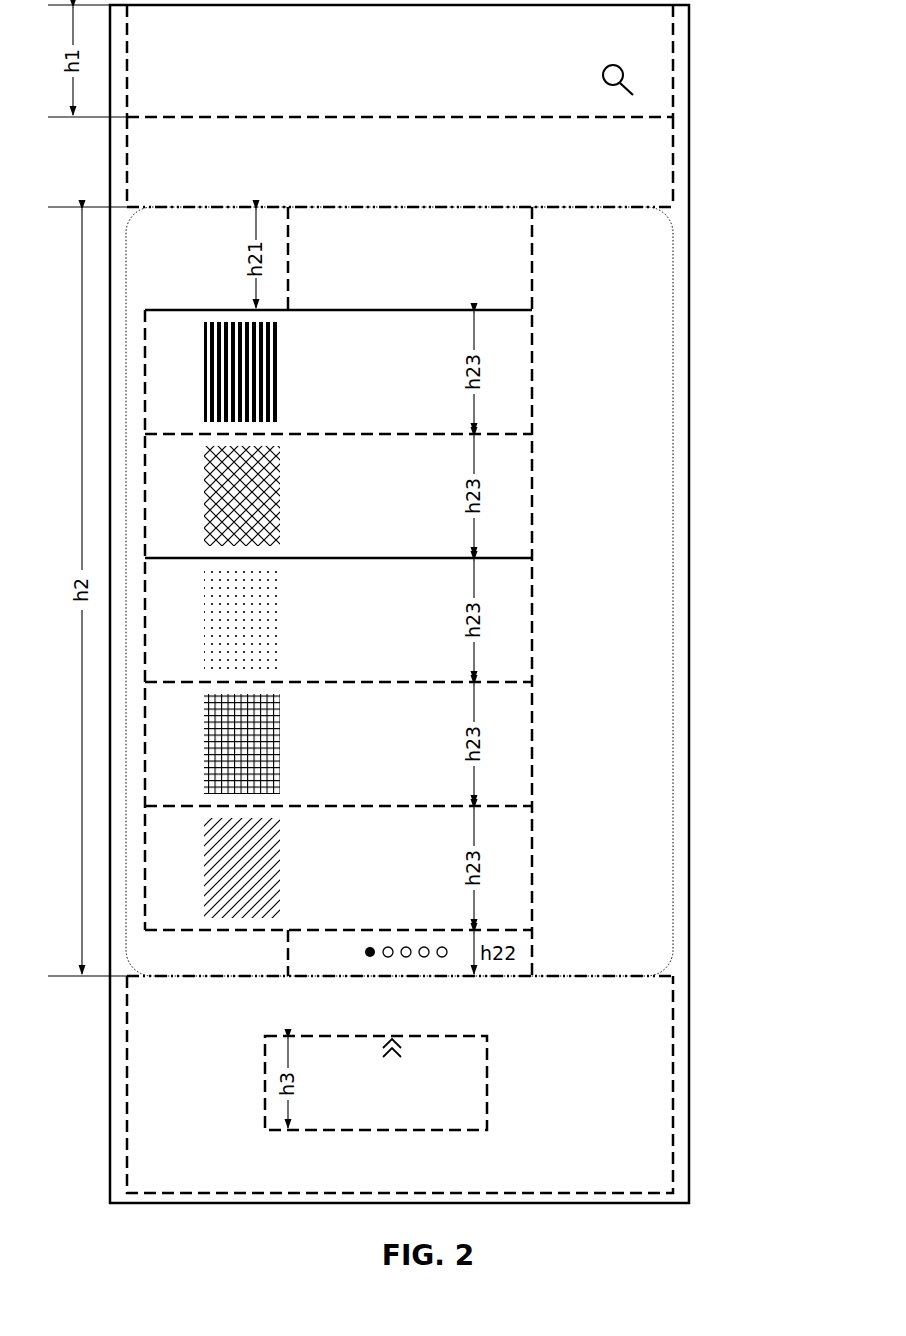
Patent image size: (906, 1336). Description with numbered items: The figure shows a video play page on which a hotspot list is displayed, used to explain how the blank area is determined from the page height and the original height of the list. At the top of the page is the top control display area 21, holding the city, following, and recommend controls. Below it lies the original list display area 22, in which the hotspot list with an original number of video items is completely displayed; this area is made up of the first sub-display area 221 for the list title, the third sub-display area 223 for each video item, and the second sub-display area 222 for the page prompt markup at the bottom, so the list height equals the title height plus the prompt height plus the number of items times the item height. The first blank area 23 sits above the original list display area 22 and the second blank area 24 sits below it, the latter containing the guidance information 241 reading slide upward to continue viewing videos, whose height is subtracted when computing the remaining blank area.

The top control display area 21 is at (673, 63).
The original list display area 22 is at (673, 605).
The first blank area 23 is at (673, 148).
The second blank area 24 is at (673, 1060).
The first sub-display area 221 is at (533, 262).
The second sub-display area 222 is at (533, 962).
The third sub-display area 223 is at (533, 365).
The slide prompt 241 is at (488, 1085).